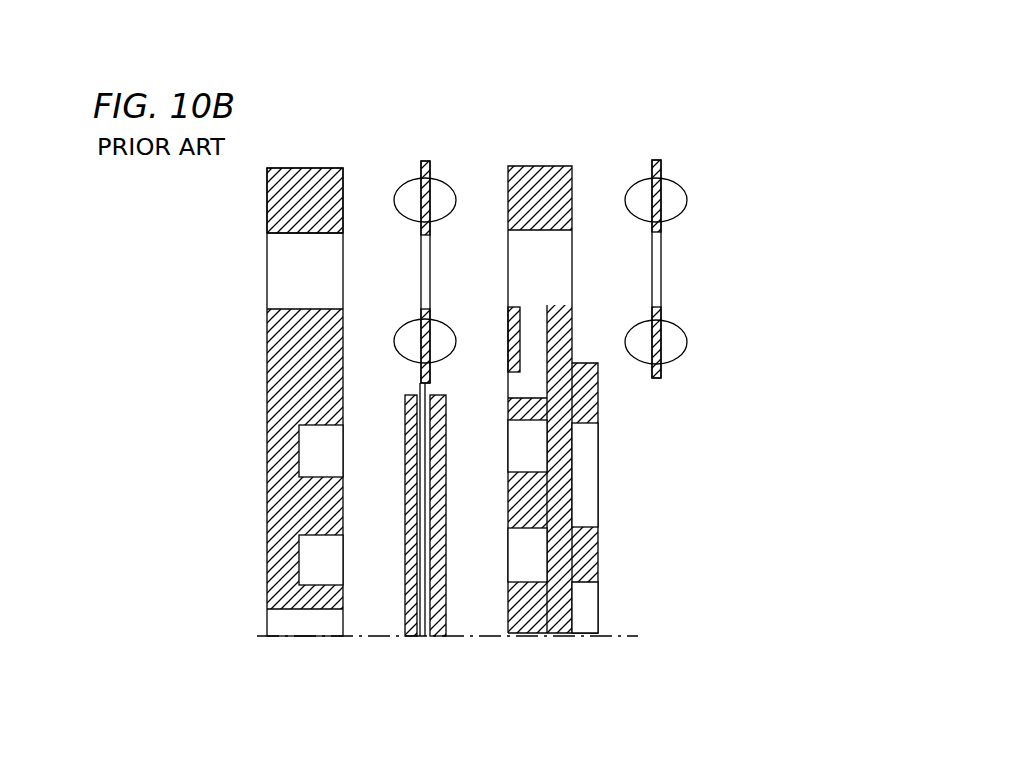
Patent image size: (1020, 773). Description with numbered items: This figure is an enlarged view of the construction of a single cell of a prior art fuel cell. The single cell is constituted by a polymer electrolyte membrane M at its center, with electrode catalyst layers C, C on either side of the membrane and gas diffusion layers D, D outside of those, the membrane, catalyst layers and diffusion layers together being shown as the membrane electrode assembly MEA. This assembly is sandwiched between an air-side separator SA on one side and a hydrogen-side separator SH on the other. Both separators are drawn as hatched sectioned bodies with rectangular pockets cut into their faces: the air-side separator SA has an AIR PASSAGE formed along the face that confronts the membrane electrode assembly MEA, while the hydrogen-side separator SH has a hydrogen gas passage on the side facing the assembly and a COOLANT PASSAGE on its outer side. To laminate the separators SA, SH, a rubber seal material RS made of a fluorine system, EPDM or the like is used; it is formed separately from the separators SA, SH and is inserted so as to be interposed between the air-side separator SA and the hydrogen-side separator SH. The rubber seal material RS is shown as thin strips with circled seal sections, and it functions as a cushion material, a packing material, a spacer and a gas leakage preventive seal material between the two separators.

The air-side separator SA is at (285, 208).
The membrane electrode assembly MEA is at (464, 124).
The rubber seal material RS is at (441, 336).
The hydrogen-side separator SH is at (571, 177).
The electrode catalyst layer C is at (425, 423).
The polymer electrolyte membrane M is at (425, 381).
The gas diffusion layer D is at (413, 612).
The air passage AIR PASSAGE is at (305, 455).
The coolant passage COOLANT PASSAGE is at (588, 508).